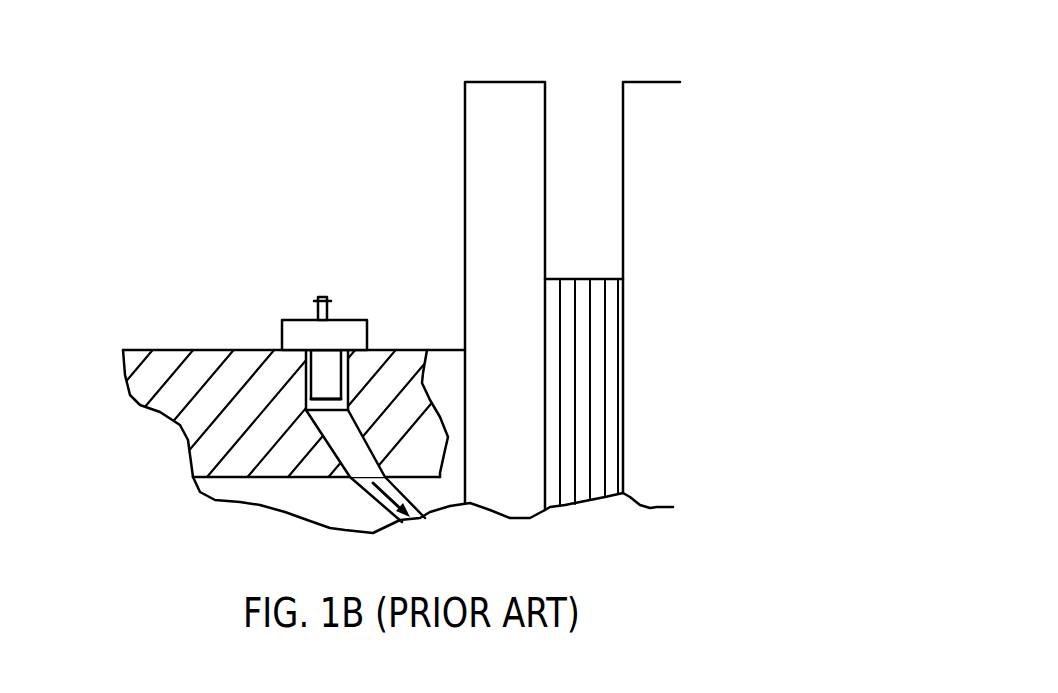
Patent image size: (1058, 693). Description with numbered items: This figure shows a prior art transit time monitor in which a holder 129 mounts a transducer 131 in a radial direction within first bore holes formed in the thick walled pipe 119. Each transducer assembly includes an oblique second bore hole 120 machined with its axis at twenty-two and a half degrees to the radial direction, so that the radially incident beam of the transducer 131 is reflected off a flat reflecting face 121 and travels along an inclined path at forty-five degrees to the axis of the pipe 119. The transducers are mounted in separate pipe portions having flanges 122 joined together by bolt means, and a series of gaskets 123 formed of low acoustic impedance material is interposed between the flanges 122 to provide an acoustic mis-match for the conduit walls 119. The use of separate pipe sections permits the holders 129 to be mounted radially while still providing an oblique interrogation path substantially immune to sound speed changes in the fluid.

The thick walled pipe 119 is at (168, 365).
The oblique second bore hole 120 is at (355, 477).
The flat reflecting face 121 is at (325, 418).
The flanges 122 is at (490, 92).
The gaskets 123 is at (567, 292).
The holder 129 is at (335, 327).
The transducer 131 is at (316, 395).